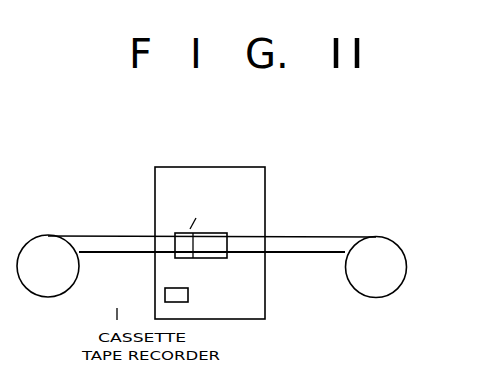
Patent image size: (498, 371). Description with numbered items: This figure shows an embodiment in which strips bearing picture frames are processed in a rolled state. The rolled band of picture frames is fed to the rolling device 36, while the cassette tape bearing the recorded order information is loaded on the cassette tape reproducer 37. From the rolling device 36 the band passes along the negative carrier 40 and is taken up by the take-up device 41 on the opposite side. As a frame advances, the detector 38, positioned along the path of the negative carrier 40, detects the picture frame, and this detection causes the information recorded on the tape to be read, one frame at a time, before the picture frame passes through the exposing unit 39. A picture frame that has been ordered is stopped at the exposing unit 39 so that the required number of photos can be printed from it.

The rolling device 36 is at (49, 297).
The cassette tape reproducer 37 is at (165, 296).
The detector 38 is at (178, 258).
The exposing unit 39 is at (229, 166).
The negative carrier 40 is at (142, 235).
The take-up device 41 is at (376, 298).